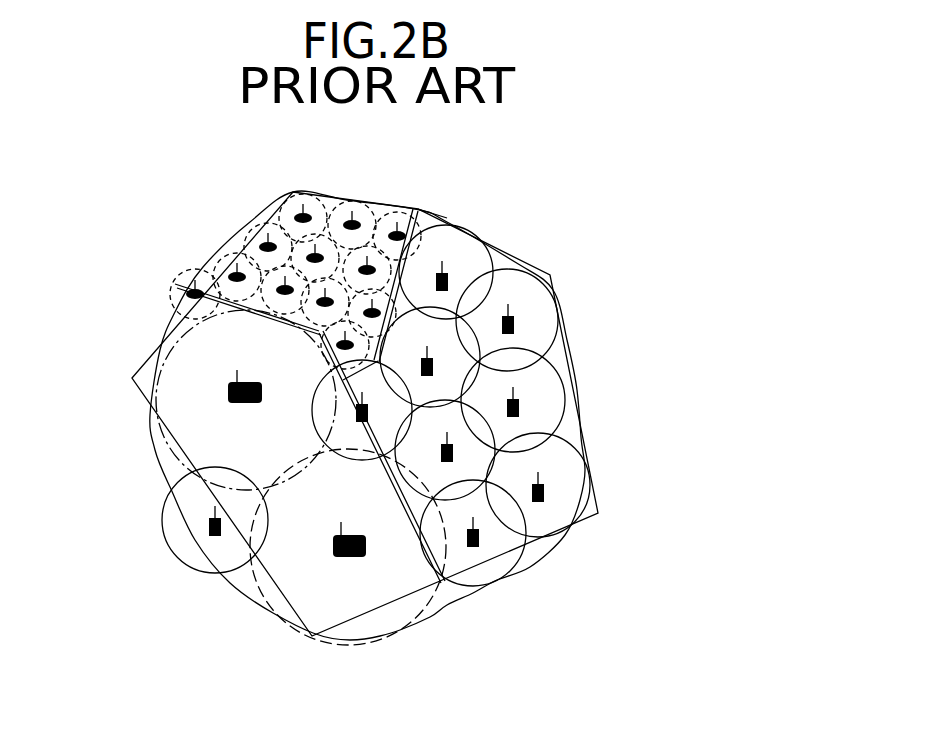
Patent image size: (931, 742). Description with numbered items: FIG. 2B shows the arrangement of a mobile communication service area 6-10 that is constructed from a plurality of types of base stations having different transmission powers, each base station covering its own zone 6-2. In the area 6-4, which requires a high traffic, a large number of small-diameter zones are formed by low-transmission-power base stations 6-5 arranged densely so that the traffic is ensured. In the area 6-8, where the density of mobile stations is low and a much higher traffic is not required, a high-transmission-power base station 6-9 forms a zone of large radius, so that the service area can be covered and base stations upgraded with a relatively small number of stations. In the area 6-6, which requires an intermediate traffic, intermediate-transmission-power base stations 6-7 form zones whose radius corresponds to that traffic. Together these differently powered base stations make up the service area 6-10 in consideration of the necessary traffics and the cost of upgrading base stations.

The zone 6-2 is at (473, 593).
The area requiring a high traffic 6-4 is at (293, 190).
The low-transmission-power base station 6-5 is at (215, 272).
The area requiring an intermediate traffic 6-6 is at (550, 278).
The intermediate-transmission-power base station 6-7 is at (520, 408).
The area of low mobile station density 6-8 is at (132, 378).
The high-transmission-power base station 6-9 is at (232, 404).
The service area 6-10 is at (247, 593).